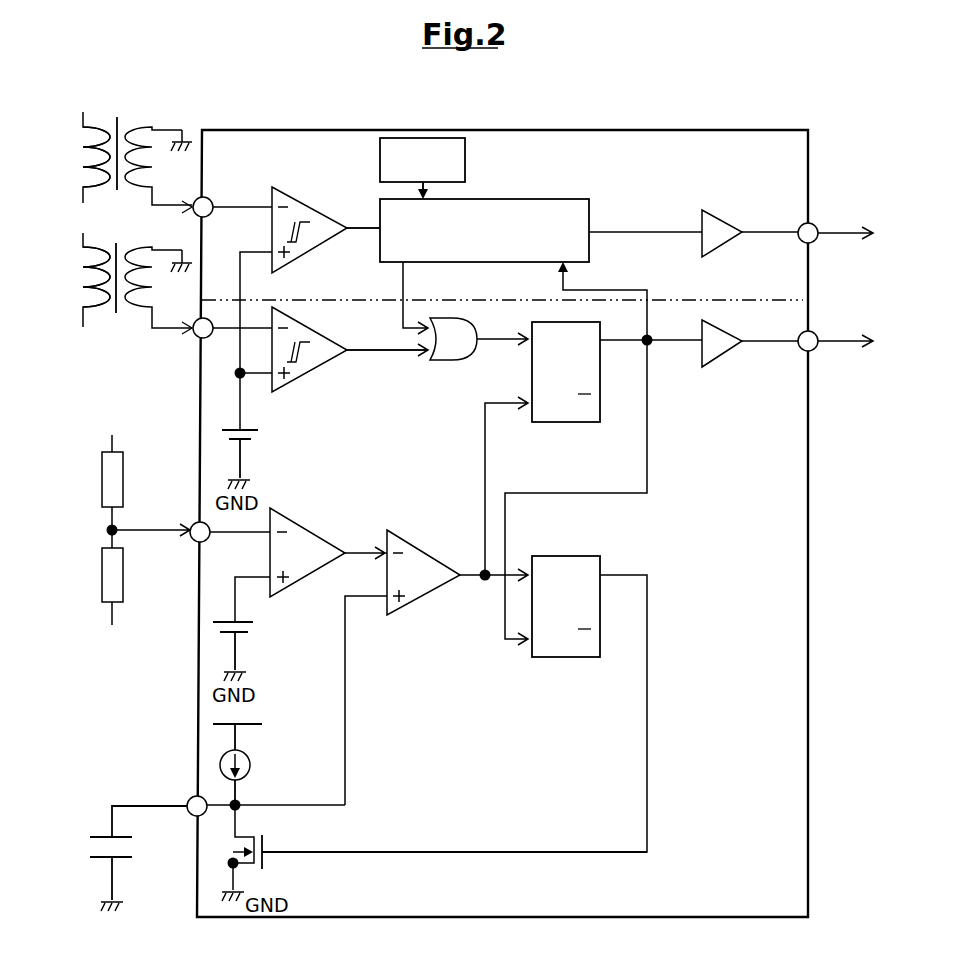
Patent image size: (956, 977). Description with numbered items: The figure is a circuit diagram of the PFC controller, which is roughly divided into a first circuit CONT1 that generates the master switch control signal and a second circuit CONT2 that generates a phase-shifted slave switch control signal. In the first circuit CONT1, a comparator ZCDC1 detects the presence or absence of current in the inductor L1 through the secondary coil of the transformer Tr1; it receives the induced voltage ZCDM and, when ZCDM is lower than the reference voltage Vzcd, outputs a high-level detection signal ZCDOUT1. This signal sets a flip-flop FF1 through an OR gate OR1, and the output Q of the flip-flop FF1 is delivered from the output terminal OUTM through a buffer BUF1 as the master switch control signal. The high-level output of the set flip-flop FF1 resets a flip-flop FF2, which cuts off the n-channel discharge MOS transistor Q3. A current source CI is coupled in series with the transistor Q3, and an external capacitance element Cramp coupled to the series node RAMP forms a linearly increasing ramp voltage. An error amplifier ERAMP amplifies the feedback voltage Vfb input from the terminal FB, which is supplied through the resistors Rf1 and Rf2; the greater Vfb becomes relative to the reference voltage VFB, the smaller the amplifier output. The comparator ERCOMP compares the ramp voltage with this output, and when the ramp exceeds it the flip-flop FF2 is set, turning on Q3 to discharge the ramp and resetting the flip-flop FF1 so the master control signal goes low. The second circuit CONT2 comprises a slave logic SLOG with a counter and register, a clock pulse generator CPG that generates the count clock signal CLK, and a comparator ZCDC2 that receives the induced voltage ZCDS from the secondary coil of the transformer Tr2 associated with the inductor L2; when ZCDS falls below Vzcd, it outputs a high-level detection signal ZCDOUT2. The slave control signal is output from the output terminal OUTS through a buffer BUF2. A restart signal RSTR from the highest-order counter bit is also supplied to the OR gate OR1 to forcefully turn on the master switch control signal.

The transformer Tr2 is at (160, 101).
The transformer Tr1 is at (152, 339).
The inductor L2 is at (84, 156).
The inductor L1 is at (84, 275).
The induced voltage ZCDS is at (197, 198).
The induced voltage ZCDM is at (172, 330).
The comparator ZCDC2 is at (306, 255).
The comparator ZCDC1 is at (306, 375).
The detection signal ZCDOUT2 is at (360, 226).
The detection signal ZCDOUT1 is at (371, 350).
The reference voltage Vzcd is at (260, 435).
The clock pulse generator CPG is at (422, 168).
The count clock signal CLK is at (431, 191).
The slave logic SLOG is at (541, 230).
The restart signal RSTR is at (405, 280).
The OR gate OR1 is at (457, 361).
The flip-flop FF1 is at (540, 423).
The flip-flop FF2 is at (540, 658).
The buffer BUF2 is at (722, 245).
The buffer BUF1 is at (722, 353).
The output terminal OUTS is at (851, 204).
The output terminal OUTM is at (815, 334).
The second circuit CONT2 is at (758, 195).
The first circuit CONT1 is at (768, 439).
The feedback resistor Rf1 is at (124, 465).
The feedback resistor Rf2 is at (124, 588).
The feedback voltage Vfb is at (161, 529).
The terminal FB is at (209, 539).
The error amplifier ERAMP is at (320, 532).
The reference voltage VFB is at (243, 651).
The comparator ERCOMP is at (408, 604).
The rated power supply CI is at (252, 765).
The series node RAMP is at (245, 798).
The capacitance element Cramp is at (103, 835).
The discharge MOS transistor Q3 is at (262, 866).